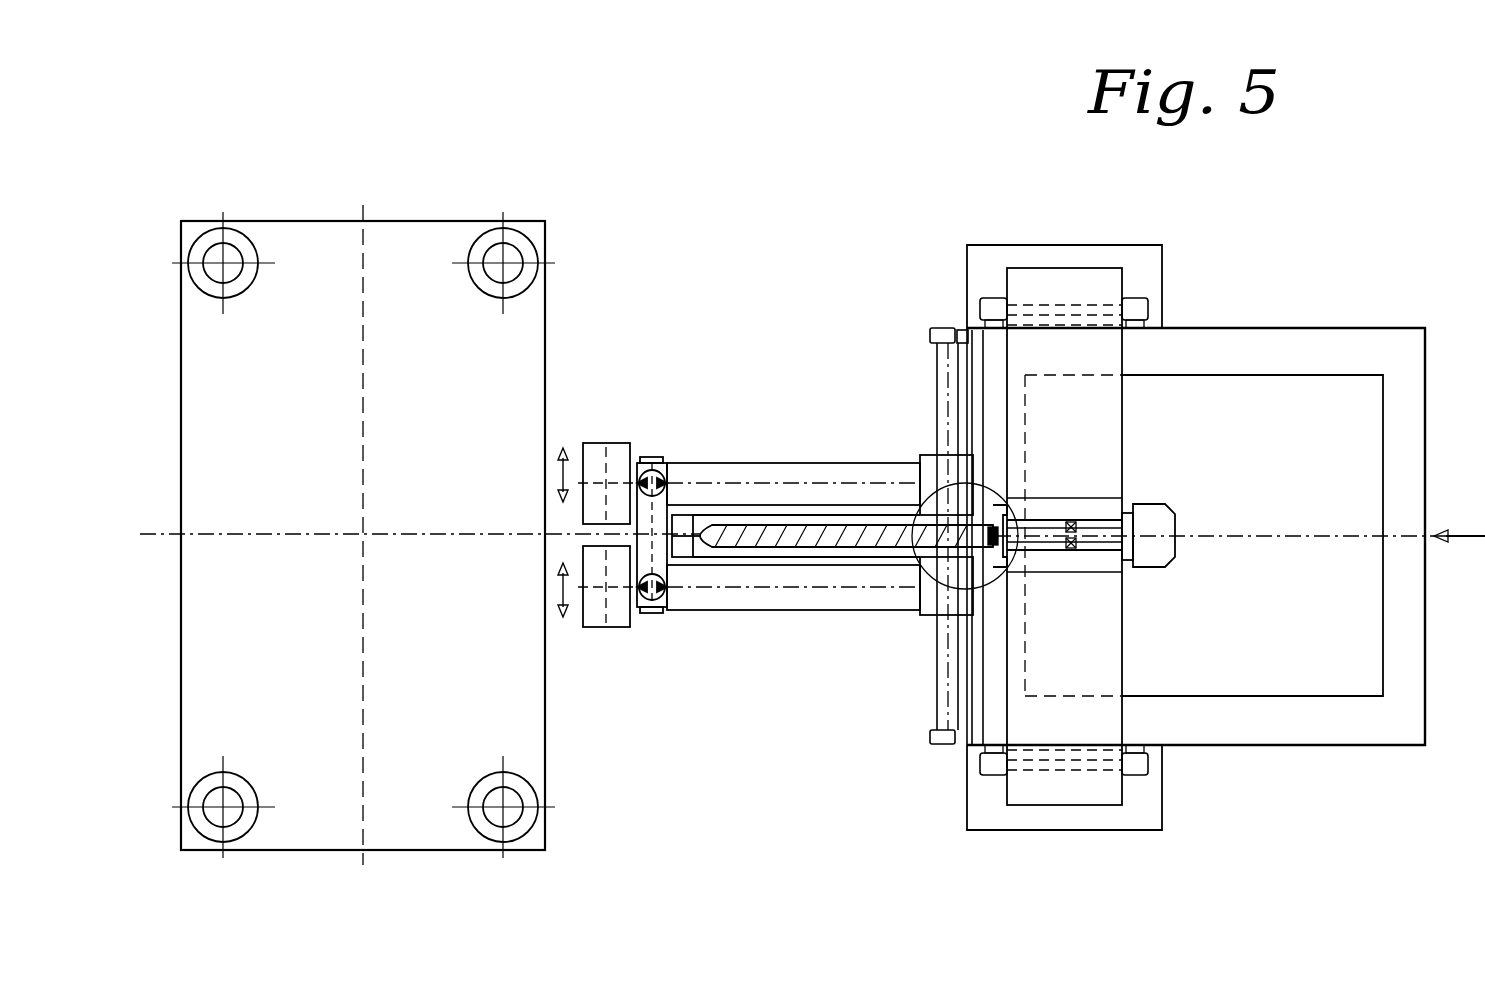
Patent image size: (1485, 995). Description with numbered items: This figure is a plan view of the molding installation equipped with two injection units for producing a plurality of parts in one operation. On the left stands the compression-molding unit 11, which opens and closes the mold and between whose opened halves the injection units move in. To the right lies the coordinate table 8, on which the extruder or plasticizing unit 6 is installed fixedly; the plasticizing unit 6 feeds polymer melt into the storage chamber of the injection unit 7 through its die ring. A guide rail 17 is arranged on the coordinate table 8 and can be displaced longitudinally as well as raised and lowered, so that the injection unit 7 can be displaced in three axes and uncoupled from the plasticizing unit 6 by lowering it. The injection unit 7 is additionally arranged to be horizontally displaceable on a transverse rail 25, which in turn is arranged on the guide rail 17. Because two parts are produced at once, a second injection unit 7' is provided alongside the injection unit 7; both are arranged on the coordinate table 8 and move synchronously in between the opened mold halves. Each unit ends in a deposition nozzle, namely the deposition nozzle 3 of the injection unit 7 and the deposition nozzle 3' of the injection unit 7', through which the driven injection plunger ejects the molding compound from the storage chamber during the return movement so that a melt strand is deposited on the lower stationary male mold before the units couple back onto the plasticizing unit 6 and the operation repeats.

The compression-molding unit 11 is at (566, 284).
The guide rail 17 is at (1142, 363).
The coordinate table 8 is at (1142, 270).
The deposition nozzle 3' is at (631, 417).
The deposition nozzle 3 is at (629, 659).
The injection unit 7' is at (793, 408).
The injection unit 7 is at (793, 668).
The plasticizing unit 6 is at (821, 508).
The transverse rail 25 is at (962, 642).